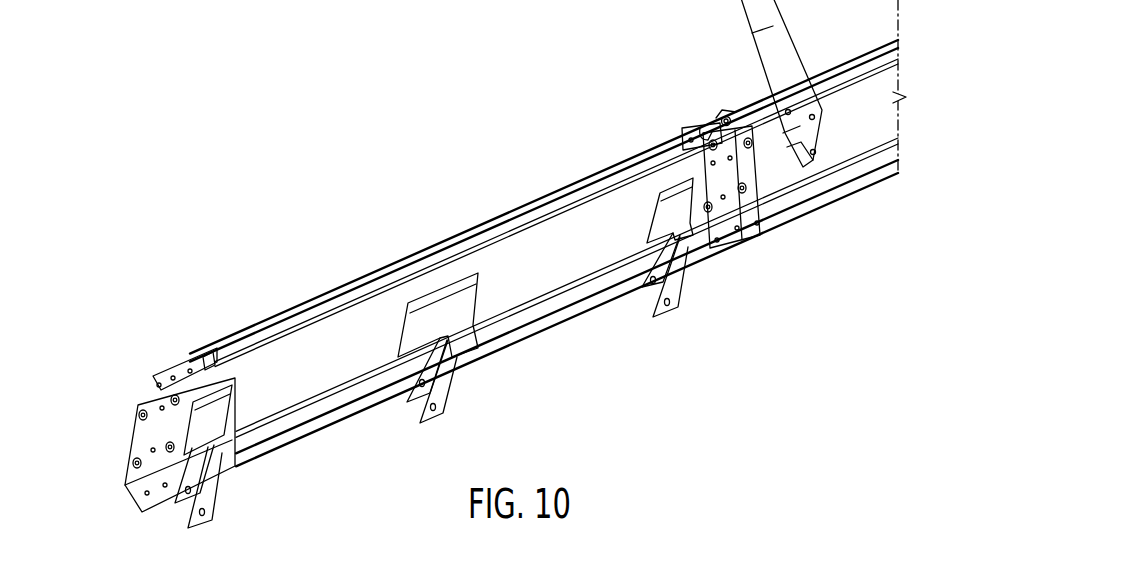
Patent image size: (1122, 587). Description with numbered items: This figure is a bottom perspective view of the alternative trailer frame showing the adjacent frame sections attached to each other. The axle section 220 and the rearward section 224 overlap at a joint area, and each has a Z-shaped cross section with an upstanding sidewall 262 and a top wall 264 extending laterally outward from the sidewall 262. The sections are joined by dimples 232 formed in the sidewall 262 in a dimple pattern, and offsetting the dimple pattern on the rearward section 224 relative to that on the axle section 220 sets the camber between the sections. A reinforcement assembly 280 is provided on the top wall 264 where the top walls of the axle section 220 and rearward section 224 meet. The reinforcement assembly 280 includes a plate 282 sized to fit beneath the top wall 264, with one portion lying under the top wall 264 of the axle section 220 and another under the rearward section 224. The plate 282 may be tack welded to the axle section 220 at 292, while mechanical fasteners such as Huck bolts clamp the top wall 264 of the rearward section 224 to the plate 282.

The axle section 220 is at (500, 263).
The rearward section 224 is at (865, 124).
The dimples 232 is at (730, 160).
The upstanding sidewall 262 is at (542, 233).
The top wall 264 is at (562, 207).
The reinforcement assembly 280 is at (178, 363).
The plate 282 is at (704, 118).
The tack weld 292 is at (682, 130).